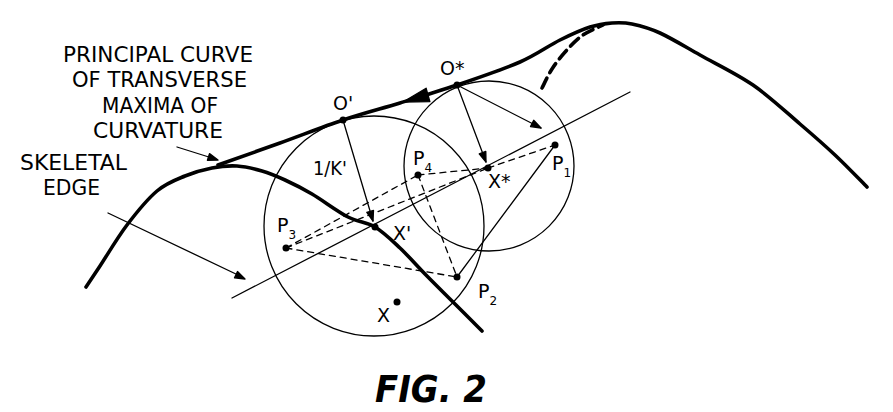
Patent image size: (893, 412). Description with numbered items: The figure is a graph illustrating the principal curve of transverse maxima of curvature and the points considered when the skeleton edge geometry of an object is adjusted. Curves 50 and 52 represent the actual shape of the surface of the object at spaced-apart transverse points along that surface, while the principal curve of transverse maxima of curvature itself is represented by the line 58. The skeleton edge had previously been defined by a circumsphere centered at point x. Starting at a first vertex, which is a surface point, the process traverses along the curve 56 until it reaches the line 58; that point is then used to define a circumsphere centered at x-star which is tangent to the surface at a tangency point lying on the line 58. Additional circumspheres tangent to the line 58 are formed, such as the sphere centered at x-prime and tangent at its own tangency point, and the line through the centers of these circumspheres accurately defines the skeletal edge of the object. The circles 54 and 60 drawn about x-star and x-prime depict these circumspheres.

The curve 50 is at (92, 278).
The curve 52 is at (757, 90).
The circle of curvature at X* 54 is at (557, 217).
The curve 56 is at (539, 120).
The line 58 is at (433, 93).
The circle of curvature at X' (radius 1/K') 60 is at (300, 310).